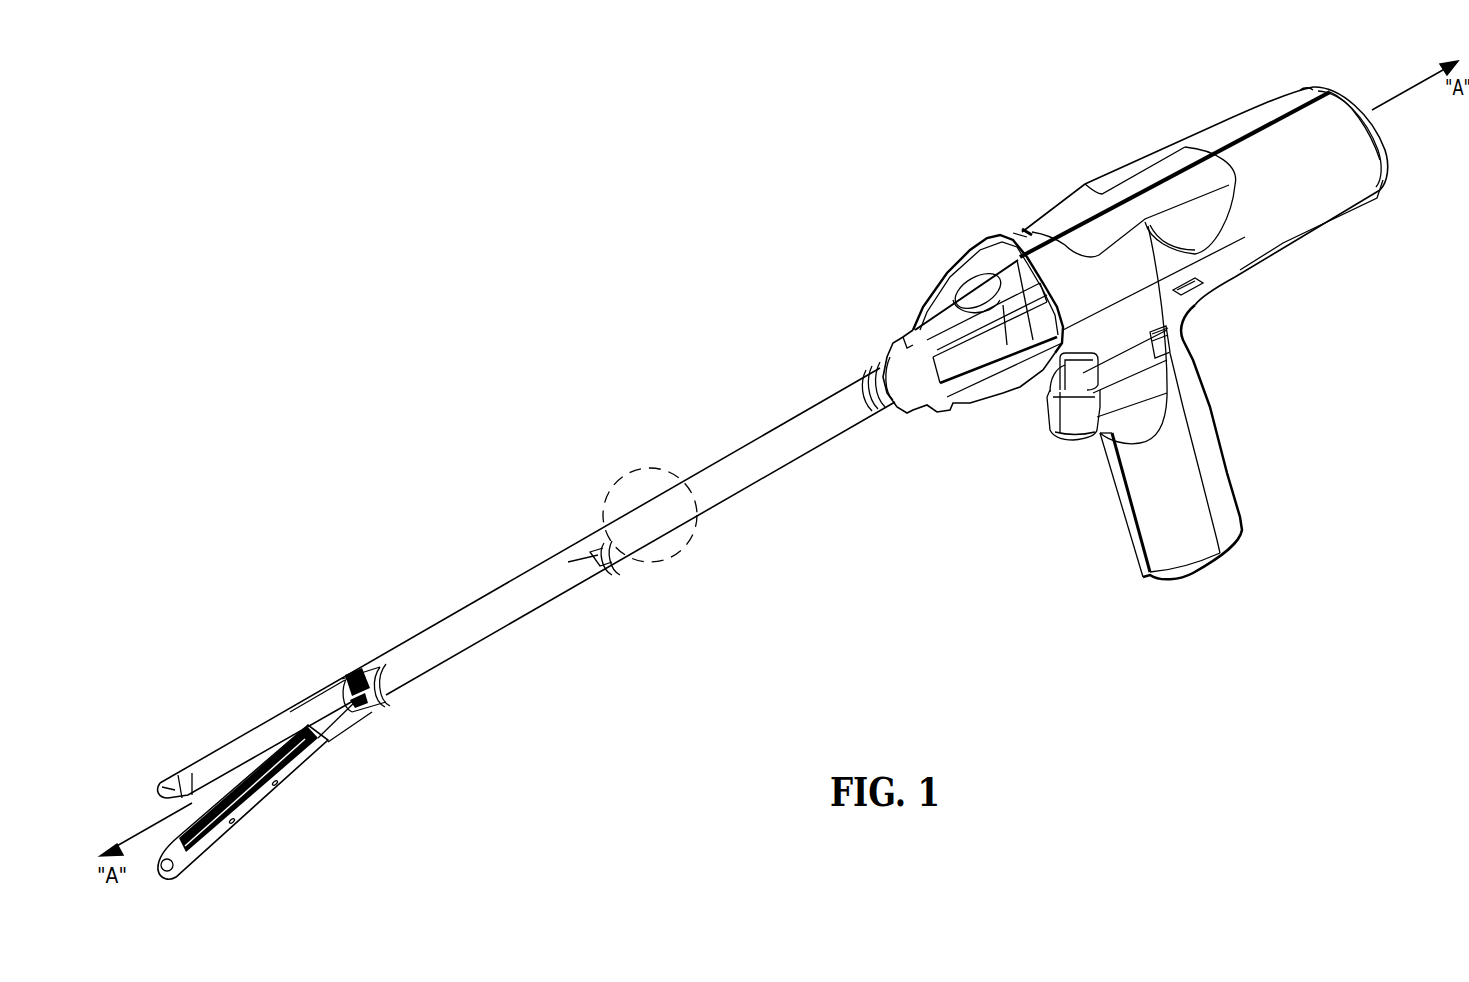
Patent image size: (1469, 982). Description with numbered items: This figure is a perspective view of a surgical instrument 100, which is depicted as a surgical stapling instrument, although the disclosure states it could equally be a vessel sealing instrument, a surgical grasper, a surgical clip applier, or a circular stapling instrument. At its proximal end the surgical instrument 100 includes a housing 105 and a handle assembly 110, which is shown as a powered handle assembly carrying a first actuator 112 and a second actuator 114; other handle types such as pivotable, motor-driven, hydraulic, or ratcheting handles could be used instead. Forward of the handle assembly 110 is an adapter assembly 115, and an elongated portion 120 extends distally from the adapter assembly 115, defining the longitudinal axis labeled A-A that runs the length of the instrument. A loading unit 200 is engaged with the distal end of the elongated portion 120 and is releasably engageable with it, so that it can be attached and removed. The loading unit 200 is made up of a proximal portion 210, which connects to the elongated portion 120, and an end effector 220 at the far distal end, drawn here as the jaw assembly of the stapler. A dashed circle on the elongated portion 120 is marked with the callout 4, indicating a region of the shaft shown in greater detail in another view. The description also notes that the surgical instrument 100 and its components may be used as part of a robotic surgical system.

The surgical instrument 100 is at (553, 255).
The housing 105 is at (1255, 113).
The handle assembly 110 is at (1114, 150).
The first actuator 112 is at (1070, 377).
The second actuator 114 is at (1060, 423).
The adapter assembly 115 is at (948, 225).
The elongated portion 120 is at (760, 400).
The detail area of FIG. 4 is at (660, 470).
The loading unit 200 is at (422, 608).
The proximal portion 210 is at (467, 637).
The end effector 220 is at (288, 798).